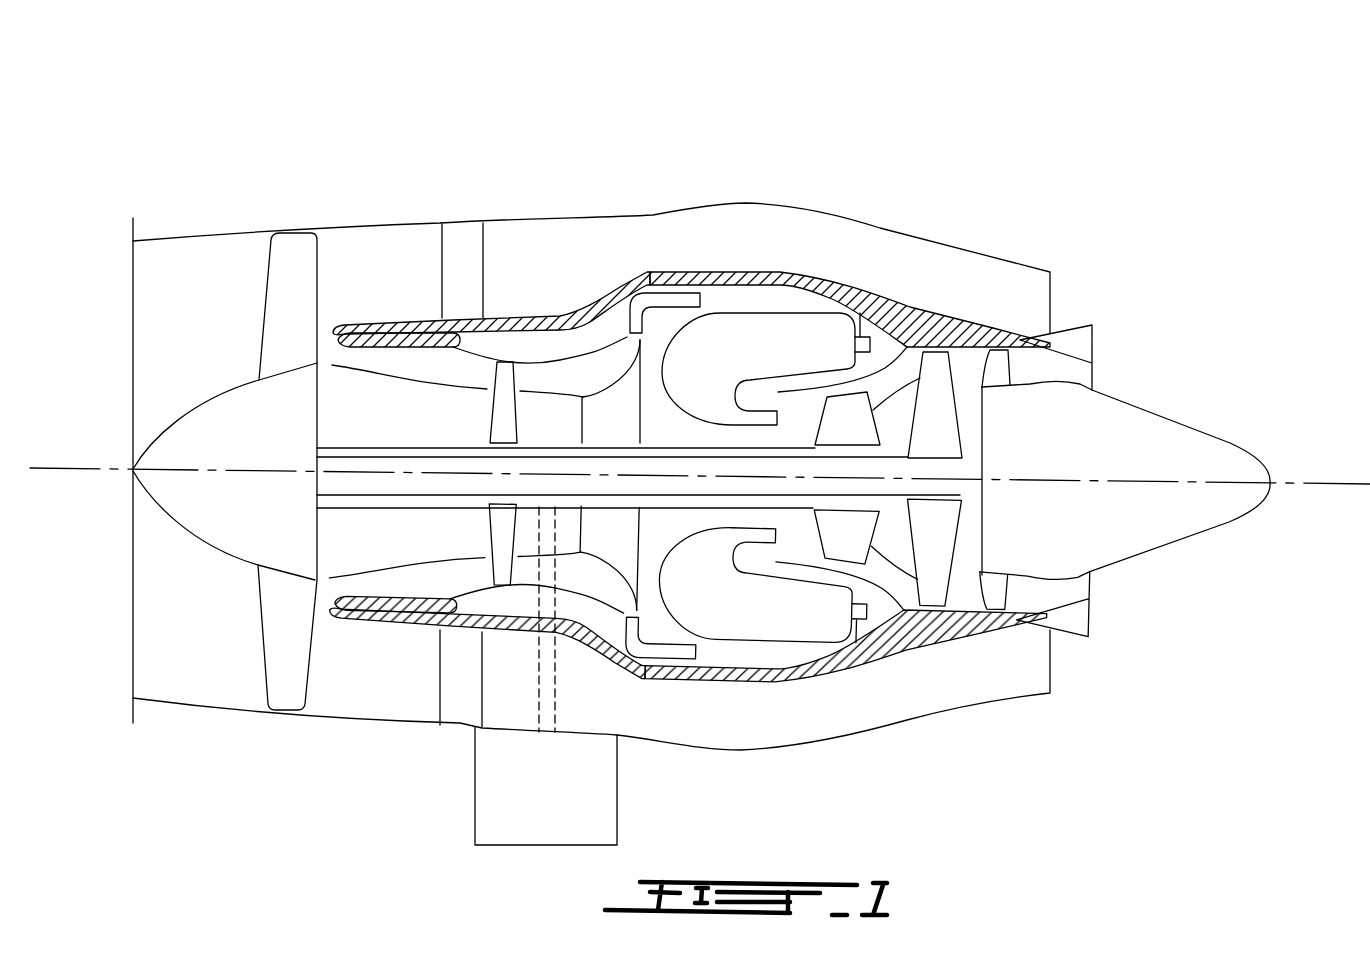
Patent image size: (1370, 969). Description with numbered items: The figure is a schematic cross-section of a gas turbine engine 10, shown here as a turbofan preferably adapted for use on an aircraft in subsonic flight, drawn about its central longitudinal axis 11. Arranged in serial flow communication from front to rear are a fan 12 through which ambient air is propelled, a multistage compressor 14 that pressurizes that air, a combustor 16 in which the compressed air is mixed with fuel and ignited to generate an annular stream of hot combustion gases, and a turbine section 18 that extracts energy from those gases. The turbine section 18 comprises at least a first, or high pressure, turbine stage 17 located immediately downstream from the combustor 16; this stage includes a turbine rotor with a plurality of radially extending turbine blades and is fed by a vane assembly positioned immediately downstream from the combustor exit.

The gas turbine engine 10 is at (866, 152).
The central longitudinal axis 11 is at (1312, 483).
The fan 12 is at (282, 627).
The multistage compressor 14 is at (563, 383).
The combustor 16 is at (760, 345).
The high pressure turbine stage 17 is at (855, 410).
The turbine section 18 is at (892, 620).